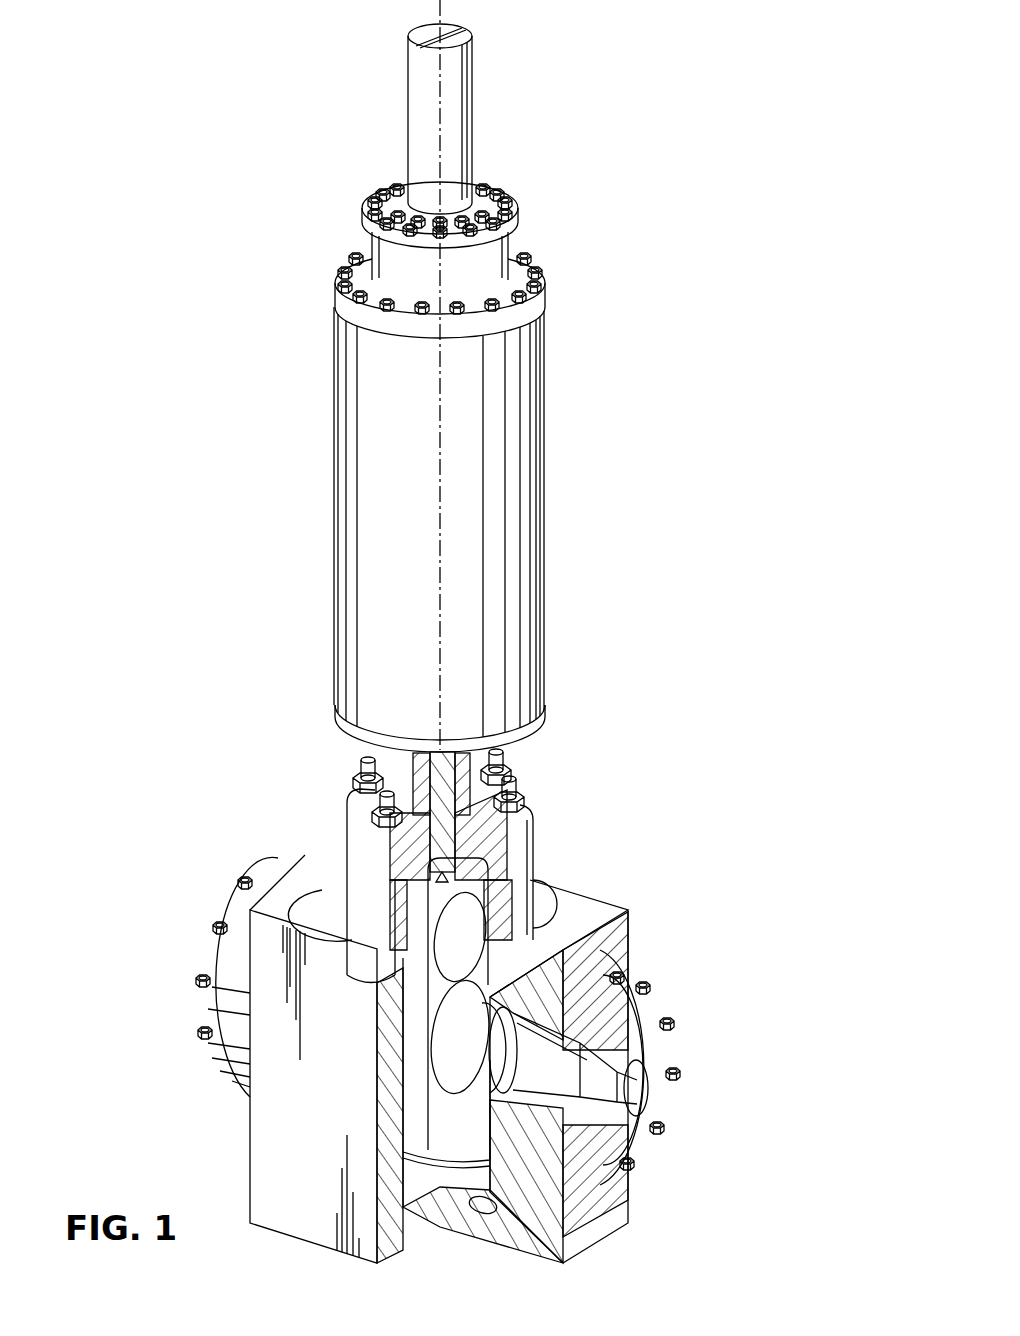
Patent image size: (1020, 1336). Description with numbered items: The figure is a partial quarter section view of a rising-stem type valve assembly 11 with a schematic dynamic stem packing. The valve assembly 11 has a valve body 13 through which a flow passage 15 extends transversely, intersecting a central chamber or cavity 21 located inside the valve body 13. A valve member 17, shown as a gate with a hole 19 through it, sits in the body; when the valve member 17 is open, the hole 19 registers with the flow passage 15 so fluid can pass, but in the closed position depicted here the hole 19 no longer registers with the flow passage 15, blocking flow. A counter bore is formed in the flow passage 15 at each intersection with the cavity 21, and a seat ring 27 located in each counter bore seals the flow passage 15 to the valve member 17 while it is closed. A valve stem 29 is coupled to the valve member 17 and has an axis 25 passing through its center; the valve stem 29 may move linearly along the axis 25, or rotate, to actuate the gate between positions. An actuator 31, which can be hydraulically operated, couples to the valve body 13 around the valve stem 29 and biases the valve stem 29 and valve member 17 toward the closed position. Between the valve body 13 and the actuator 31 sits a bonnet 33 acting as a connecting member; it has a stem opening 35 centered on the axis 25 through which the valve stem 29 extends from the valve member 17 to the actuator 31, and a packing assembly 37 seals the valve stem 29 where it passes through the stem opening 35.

The valve assembly 11 is at (613, 452).
The valve body 13 is at (605, 912).
The flow passage 15 is at (570, 1085).
The valve member 17 is at (516, 880).
The hole 19 is at (462, 938).
The cavity 21 is at (598, 1232).
The axis 25 is at (441, 2).
The seat ring 27 is at (625, 1150).
The valve stem 29 is at (355, 772).
The actuator 31 is at (535, 357).
The bonnet 33 is at (345, 842).
The stem opening 35 is at (533, 838).
The packing assembly 37 is at (525, 788).